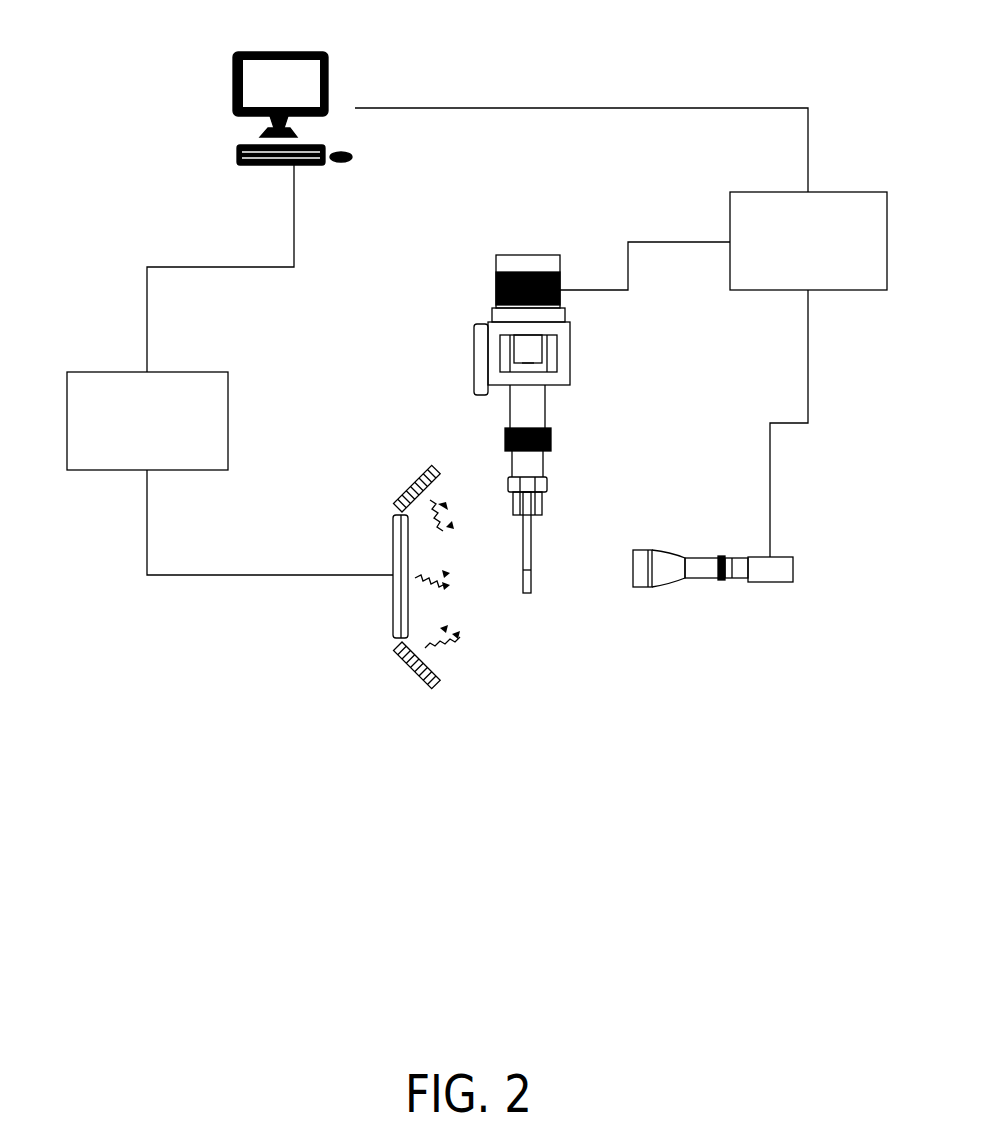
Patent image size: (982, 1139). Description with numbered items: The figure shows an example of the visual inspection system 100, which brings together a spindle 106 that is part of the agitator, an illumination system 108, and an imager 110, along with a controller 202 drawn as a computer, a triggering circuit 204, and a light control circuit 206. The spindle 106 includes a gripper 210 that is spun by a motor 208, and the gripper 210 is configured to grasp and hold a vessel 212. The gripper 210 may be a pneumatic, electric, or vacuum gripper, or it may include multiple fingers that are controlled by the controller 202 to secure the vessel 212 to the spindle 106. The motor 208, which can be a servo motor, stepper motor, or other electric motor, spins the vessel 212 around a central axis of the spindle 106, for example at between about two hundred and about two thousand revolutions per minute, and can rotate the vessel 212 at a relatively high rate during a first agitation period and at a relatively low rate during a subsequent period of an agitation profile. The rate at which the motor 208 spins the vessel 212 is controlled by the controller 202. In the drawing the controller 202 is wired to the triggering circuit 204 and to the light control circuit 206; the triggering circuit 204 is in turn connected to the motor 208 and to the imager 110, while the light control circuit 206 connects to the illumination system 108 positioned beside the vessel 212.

The system 100 is at (103, 58).
The controller 202 is at (233, 106).
The triggering circuit 204 is at (808, 241).
The light control circuit 206 is at (147, 421).
The spindle 106 is at (500, 225).
The motor 208 is at (496, 296).
The gripper 210 is at (547, 492).
The vessel 212 is at (531, 540).
The illumination system 108 is at (402, 480).
The imager 110 is at (793, 570).